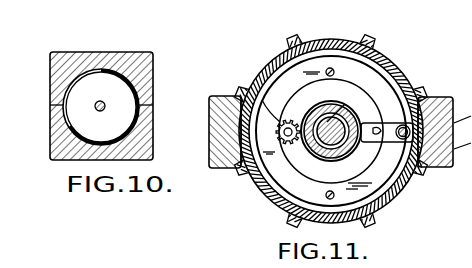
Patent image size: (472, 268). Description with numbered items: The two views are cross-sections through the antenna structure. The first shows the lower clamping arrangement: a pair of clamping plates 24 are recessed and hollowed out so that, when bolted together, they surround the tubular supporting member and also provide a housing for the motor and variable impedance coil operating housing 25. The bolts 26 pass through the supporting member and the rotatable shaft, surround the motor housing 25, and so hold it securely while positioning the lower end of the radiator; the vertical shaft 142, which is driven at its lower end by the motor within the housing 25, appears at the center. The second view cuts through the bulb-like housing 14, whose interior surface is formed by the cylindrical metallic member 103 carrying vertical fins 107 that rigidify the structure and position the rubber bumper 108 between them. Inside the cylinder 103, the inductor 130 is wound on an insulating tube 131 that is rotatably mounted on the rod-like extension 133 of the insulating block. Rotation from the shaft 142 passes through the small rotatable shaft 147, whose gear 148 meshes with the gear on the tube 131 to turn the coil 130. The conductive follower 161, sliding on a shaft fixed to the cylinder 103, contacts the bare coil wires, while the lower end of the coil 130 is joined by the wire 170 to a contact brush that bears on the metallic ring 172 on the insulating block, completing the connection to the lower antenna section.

In FIG. 10, the clamping plates 24 is at (153, 54).
In FIG. 10, the motor housing 25 is at (77, 112).
In FIG. 10, the bolts 26 is at (143, 68).
In FIG. 10, the vertical shaft 142 is at (104, 104).
In FIG. 11, the cylindrical metallic member 103 is at (328, 46).
In FIG. 11, the metallic ring 172 is at (365, 80).
In FIG. 11, the wire 170 is at (380, 94).
In FIG. 11, the vertical fins 107 is at (421, 96).
In FIG. 11, the rubber bumper 108 is at (220, 124).
In FIG. 11, the bulb-like housing 14 is at (414, 181).
In FIG. 11, the conductive follower 161 is at (402, 175).
In FIG. 11, the rod-like extension 133 is at (336, 97).
In FIG. 11, the insulating tube 131 is at (325, 155).
In FIG. 11, the inductor 130 is at (313, 163).
In FIG. 11, the gear 148 is at (288, 120).
In FIG. 11, the rotatable shaft 147 is at (285, 118).